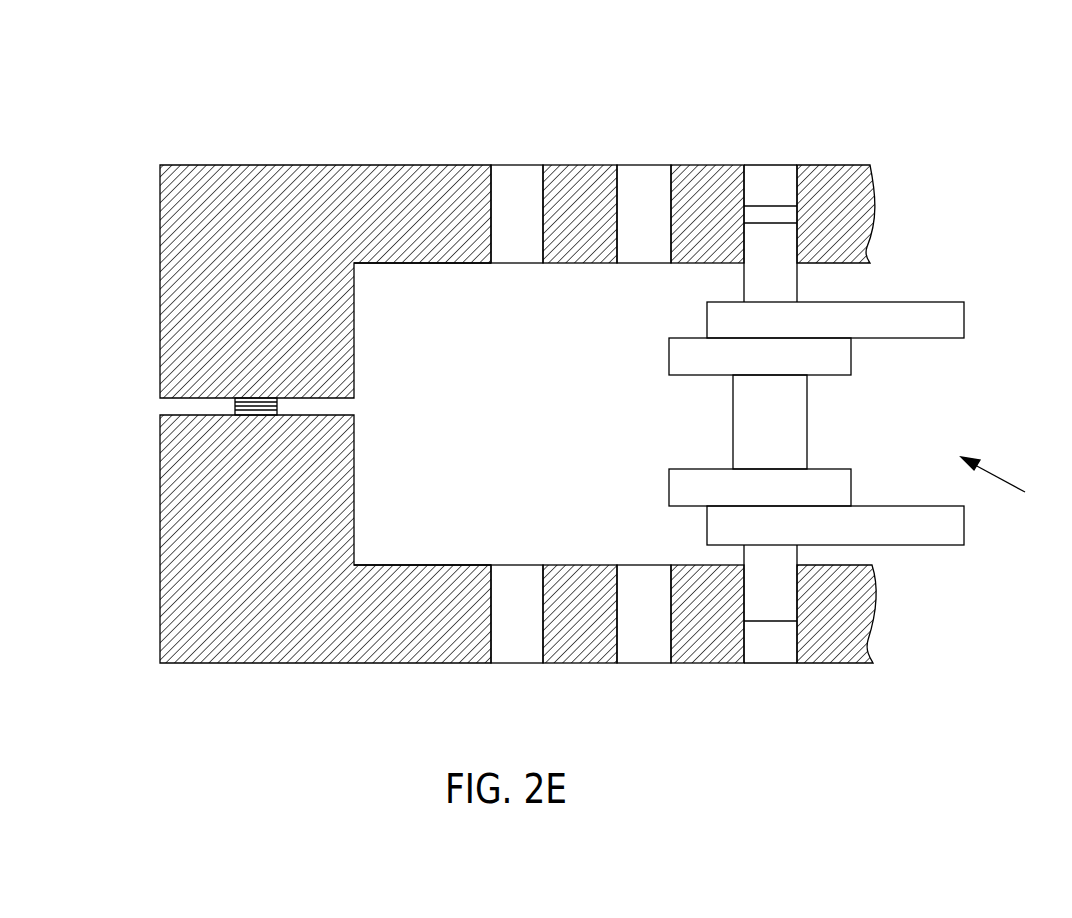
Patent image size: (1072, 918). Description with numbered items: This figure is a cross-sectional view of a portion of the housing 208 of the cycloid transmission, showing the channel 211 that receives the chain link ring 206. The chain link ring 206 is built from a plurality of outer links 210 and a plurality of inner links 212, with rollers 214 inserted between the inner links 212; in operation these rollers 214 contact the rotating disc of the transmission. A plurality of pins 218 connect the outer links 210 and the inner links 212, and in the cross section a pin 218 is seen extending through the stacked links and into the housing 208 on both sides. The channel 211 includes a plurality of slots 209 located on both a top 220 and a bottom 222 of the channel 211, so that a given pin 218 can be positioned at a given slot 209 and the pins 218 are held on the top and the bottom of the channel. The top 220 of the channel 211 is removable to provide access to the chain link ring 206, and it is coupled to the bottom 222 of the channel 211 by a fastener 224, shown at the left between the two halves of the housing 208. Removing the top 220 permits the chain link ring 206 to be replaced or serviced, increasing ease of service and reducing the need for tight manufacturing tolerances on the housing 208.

The chain link ring 206 is at (1011, 486).
The housing 208 is at (252, 137).
The slots 209 is at (523, 183).
The outer links 210 is at (952, 320).
The channel 211 is at (193, 663).
The inner links 212 is at (817, 357).
The rollers 214 is at (772, 394).
The pins 218 is at (758, 248).
The top 220 is at (440, 263).
The bottom 222 is at (460, 565).
The fastener 224 is at (277, 402).